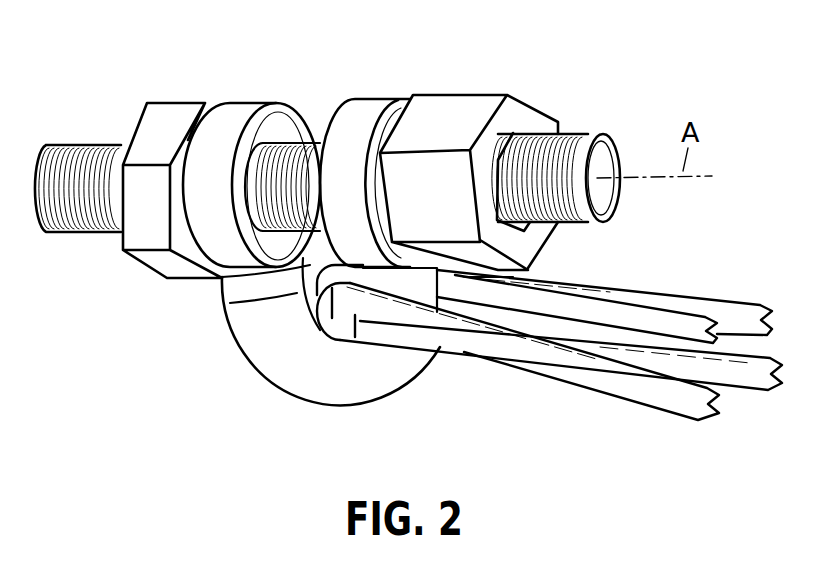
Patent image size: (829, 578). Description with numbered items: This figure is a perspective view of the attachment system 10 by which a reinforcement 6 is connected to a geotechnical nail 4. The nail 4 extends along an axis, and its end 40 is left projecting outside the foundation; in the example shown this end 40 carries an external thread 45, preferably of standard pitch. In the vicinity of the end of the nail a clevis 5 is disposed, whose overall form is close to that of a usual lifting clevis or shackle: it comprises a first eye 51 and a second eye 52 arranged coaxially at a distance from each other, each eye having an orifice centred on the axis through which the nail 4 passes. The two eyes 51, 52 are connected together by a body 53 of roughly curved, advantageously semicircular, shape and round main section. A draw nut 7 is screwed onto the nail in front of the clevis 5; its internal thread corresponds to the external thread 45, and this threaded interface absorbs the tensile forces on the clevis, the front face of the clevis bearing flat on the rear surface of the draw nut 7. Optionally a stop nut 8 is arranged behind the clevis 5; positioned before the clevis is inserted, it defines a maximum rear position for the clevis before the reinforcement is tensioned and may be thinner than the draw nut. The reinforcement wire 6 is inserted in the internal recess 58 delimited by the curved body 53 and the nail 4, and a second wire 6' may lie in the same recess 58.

The geotechnical nail 4 is at (76, 143).
The stop nut 8 is at (174, 101).
The second eye 52 is at (247, 101).
The first eye 51 is at (382, 98).
The draw nut 7 is at (474, 92).
The external thread 45 is at (534, 165).
The end of the nail 40 is at (589, 130).
The attachment system 10 is at (178, 330).
The internal recess 58 is at (313, 267).
The body 53 is at (356, 393).
The clevis 5 is at (417, 399).
The reinforcement 6 is at (518, 372).
The second wire 6' is at (561, 385).